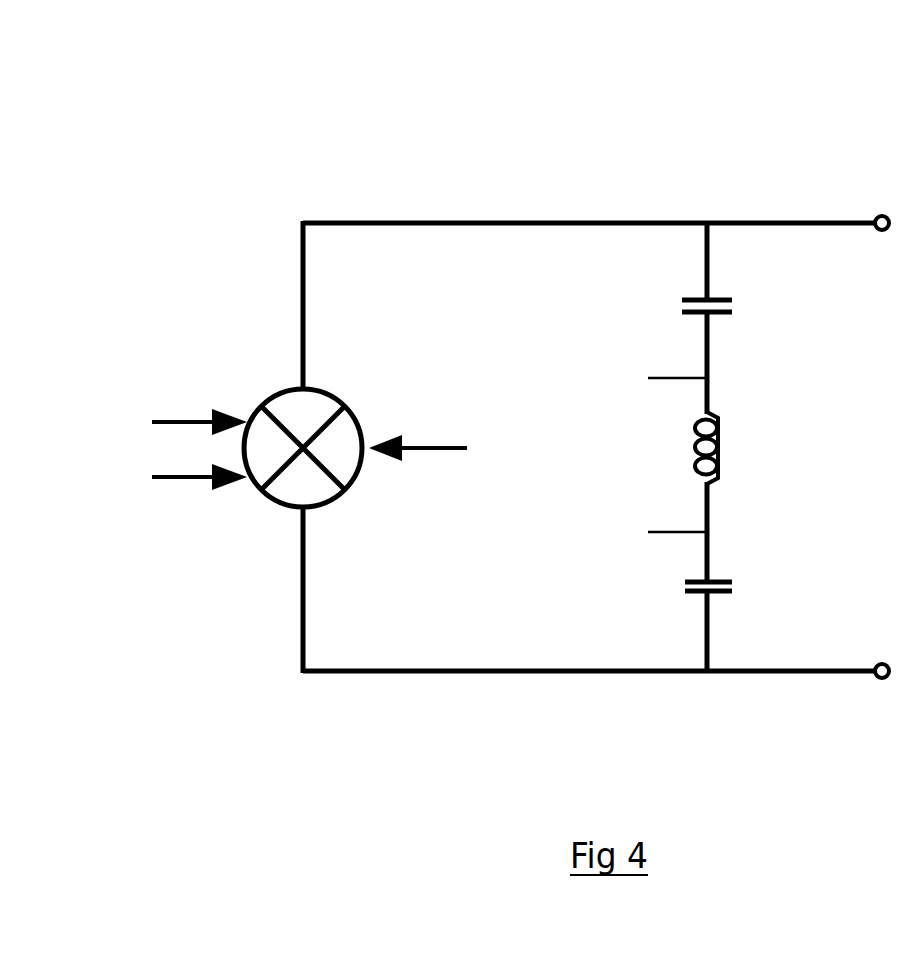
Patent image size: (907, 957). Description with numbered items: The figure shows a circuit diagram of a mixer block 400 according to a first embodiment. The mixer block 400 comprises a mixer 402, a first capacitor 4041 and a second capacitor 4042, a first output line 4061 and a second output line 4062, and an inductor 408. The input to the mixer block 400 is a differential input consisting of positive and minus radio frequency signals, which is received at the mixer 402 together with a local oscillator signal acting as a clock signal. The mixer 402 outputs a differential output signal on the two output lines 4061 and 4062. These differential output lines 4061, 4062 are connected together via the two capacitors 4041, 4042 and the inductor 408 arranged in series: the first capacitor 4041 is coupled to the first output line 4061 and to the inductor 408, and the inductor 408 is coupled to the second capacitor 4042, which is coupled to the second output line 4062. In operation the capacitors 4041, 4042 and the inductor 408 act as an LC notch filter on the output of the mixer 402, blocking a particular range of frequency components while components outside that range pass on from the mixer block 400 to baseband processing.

The mixer block 400 is at (243, 130).
The mixer 402 is at (288, 390).
The first capacitor 4041 is at (680, 304).
The second capacitor 4042 is at (727, 572).
The first output line 4061 is at (775, 222).
The second output line 4062 is at (828, 672).
The inductor 408 is at (717, 415).